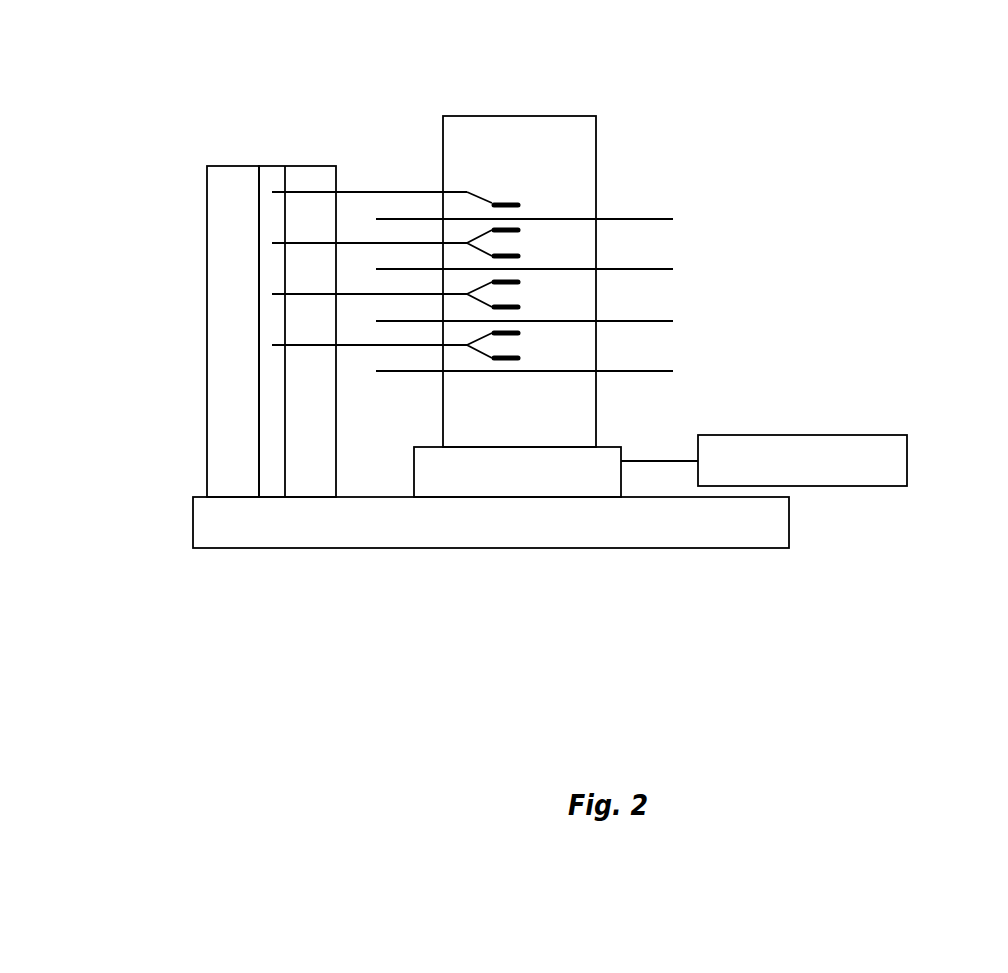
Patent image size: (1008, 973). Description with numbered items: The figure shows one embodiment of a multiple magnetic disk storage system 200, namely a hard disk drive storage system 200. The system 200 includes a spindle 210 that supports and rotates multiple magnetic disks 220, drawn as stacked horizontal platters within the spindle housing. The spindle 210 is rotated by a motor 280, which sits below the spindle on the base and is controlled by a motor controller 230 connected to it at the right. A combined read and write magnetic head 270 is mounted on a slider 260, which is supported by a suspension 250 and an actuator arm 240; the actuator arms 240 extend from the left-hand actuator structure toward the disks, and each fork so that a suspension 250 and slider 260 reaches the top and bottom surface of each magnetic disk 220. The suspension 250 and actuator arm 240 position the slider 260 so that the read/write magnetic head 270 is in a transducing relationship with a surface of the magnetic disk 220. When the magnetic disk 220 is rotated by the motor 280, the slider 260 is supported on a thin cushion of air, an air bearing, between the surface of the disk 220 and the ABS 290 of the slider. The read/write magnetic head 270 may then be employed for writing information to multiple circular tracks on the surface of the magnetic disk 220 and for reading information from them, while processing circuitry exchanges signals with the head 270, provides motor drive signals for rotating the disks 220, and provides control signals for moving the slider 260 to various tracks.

The magnetic disk storage system 200 is at (73, 628).
The spindle 210 is at (585, 115).
The magnetic disks 220 is at (635, 219).
The motor controller 230 is at (830, 435).
The actuator arm 240 is at (390, 190).
The suspension 250 is at (480, 192).
The slider 260 is at (512, 202).
The read/write magnetic head 270 is at (518, 361).
The motor 280 is at (612, 445).
The ABS 290 is at (513, 202).